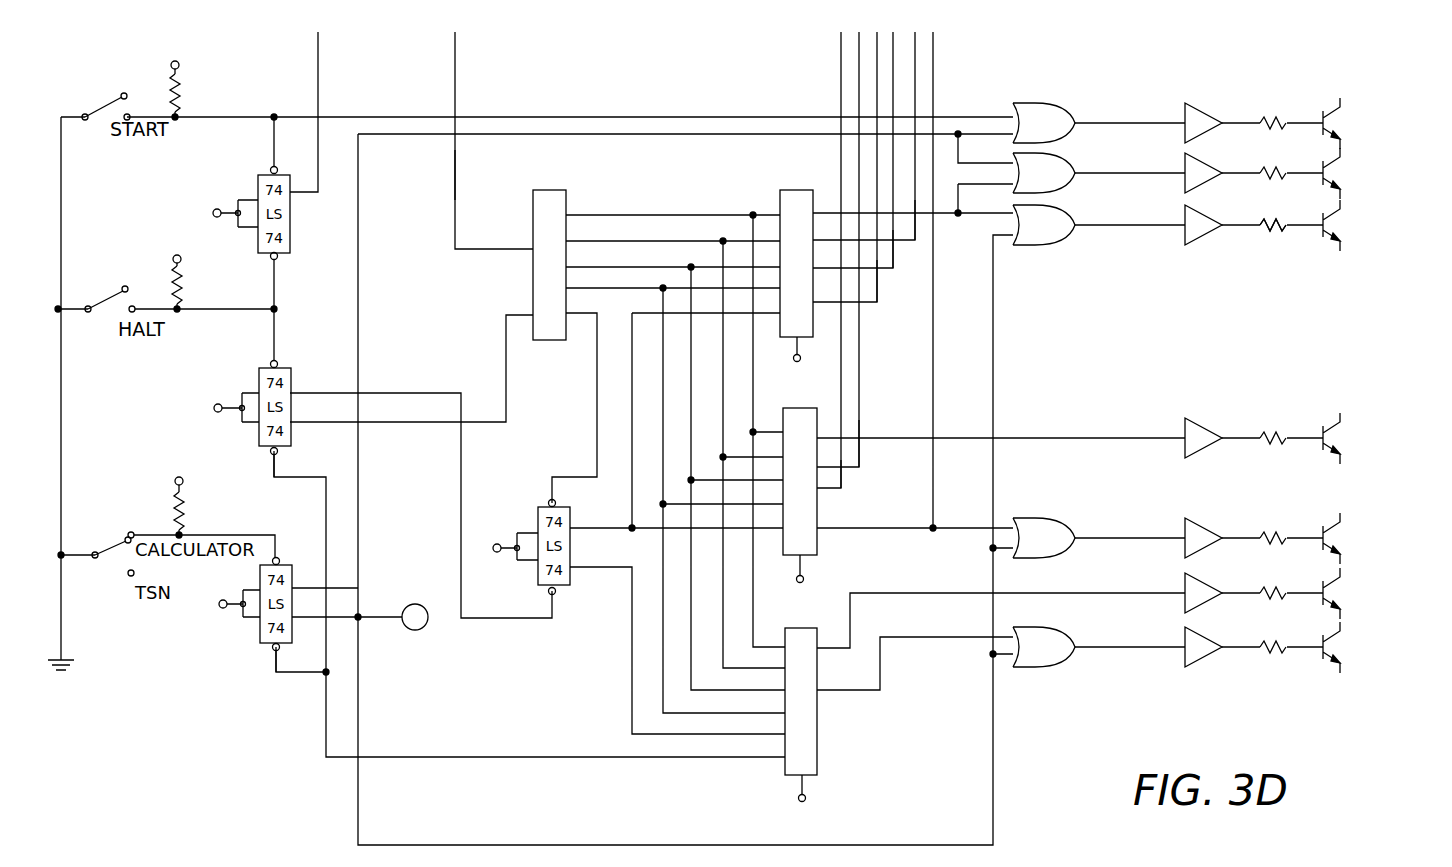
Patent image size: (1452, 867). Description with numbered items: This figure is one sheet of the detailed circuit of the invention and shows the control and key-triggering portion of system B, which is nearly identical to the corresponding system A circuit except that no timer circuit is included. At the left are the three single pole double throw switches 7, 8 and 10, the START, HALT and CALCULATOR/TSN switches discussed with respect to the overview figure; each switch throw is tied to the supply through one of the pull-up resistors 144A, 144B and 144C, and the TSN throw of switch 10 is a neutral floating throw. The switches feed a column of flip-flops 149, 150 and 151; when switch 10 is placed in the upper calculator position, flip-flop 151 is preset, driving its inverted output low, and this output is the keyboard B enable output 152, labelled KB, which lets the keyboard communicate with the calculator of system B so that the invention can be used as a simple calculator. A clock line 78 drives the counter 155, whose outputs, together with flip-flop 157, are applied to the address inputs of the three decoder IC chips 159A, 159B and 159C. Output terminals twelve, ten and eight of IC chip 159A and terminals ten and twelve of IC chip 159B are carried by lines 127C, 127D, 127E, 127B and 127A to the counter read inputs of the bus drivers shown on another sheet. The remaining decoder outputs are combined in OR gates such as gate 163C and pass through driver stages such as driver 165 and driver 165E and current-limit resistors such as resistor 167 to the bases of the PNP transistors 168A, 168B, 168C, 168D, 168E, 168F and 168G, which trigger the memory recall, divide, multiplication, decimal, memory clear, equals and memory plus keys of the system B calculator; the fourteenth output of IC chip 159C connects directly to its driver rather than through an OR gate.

The switch 7 is at (92, 112).
The switch 8 is at (76, 308).
The switch 10 is at (76, 556).
The clock input line 78 is at (455, 152).
The pull-up resistor 144A is at (180, 92).
The pull-up resistor 144B is at (172, 290).
The pull-up resistor 144C is at (175, 515).
The 74LS74 flip-flop 149 is at (292, 218).
The 74LS74 flip-flop 150 is at (288, 370).
The flip-flop 151 is at (290, 566).
The keyboard "B" enable output 152 is at (416, 604).
The 74LS193 counter 155 is at (558, 190).
The 74LS74 flip-flop 157 is at (568, 507).
The IC chip 159A is at (787, 190).
The IC chip 159B is at (795, 408).
The type 74LS138 IC chip 159C is at (800, 628).
The line 127A is at (843, 493).
The line 127B is at (861, 440).
The line 127C is at (880, 288).
The line 127D is at (896, 258).
The line 127E is at (918, 228).
The OR gate 163C is at (1070, 243).
The buffer amplifier 165 is at (1208, 237).
The buffer amplifier 165E is at (1204, 578).
The base resistor 167 is at (1268, 232).
The 3906 PNP transistor 168A is at (1332, 124).
The 3906 PNP transistor 168B is at (1332, 174).
The 3906 PNP transistor 168C is at (1332, 226).
The 3906 PNP transistor 168D is at (1332, 439).
The 3906 PNP transistor 168E is at (1332, 539).
The 3906 PNP transistor 168F is at (1332, 594).
The 3906 PNP transistor 168G is at (1332, 648).